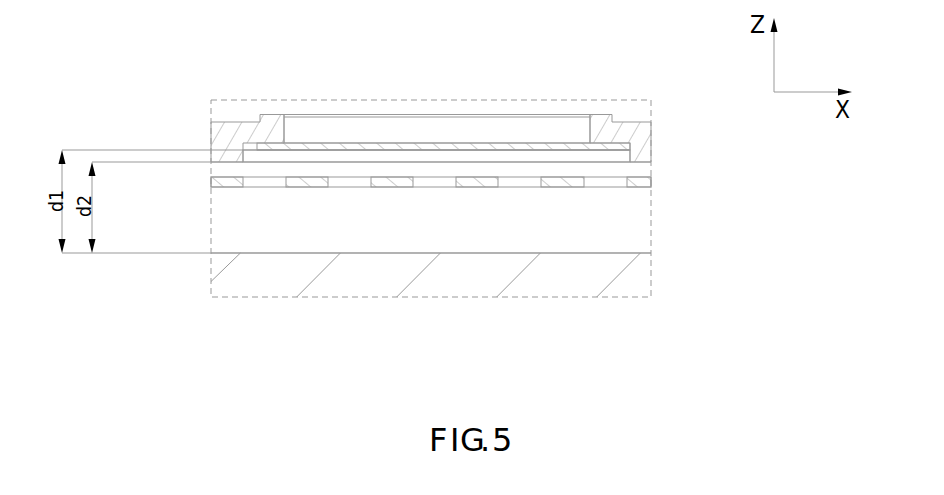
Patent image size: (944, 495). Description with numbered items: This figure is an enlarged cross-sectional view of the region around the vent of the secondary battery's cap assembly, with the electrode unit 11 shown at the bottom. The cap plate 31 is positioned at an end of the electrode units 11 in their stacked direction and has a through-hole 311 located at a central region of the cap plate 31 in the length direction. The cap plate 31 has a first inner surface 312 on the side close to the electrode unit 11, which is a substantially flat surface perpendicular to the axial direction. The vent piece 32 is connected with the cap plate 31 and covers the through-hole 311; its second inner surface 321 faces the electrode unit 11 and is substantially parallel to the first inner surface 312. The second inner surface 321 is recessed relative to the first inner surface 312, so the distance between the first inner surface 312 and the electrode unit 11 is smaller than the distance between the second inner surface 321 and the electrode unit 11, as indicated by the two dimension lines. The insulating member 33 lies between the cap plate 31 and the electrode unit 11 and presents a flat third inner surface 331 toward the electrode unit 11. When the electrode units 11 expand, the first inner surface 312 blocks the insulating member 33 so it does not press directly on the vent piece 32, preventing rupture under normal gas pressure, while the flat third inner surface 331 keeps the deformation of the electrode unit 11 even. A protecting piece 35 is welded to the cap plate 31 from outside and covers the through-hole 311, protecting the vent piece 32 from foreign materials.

The electrode unit 11 is at (635, 280).
The cap plate 31 is at (228, 126).
The through-hole 311 is at (312, 132).
The first inner surface 312 is at (645, 163).
The vent piece 32 is at (497, 143).
The second inner surface 321 is at (518, 150).
The insulating member 33 is at (459, 211).
The third inner surface 331 is at (305, 187).
The protecting piece 35 is at (397, 114).